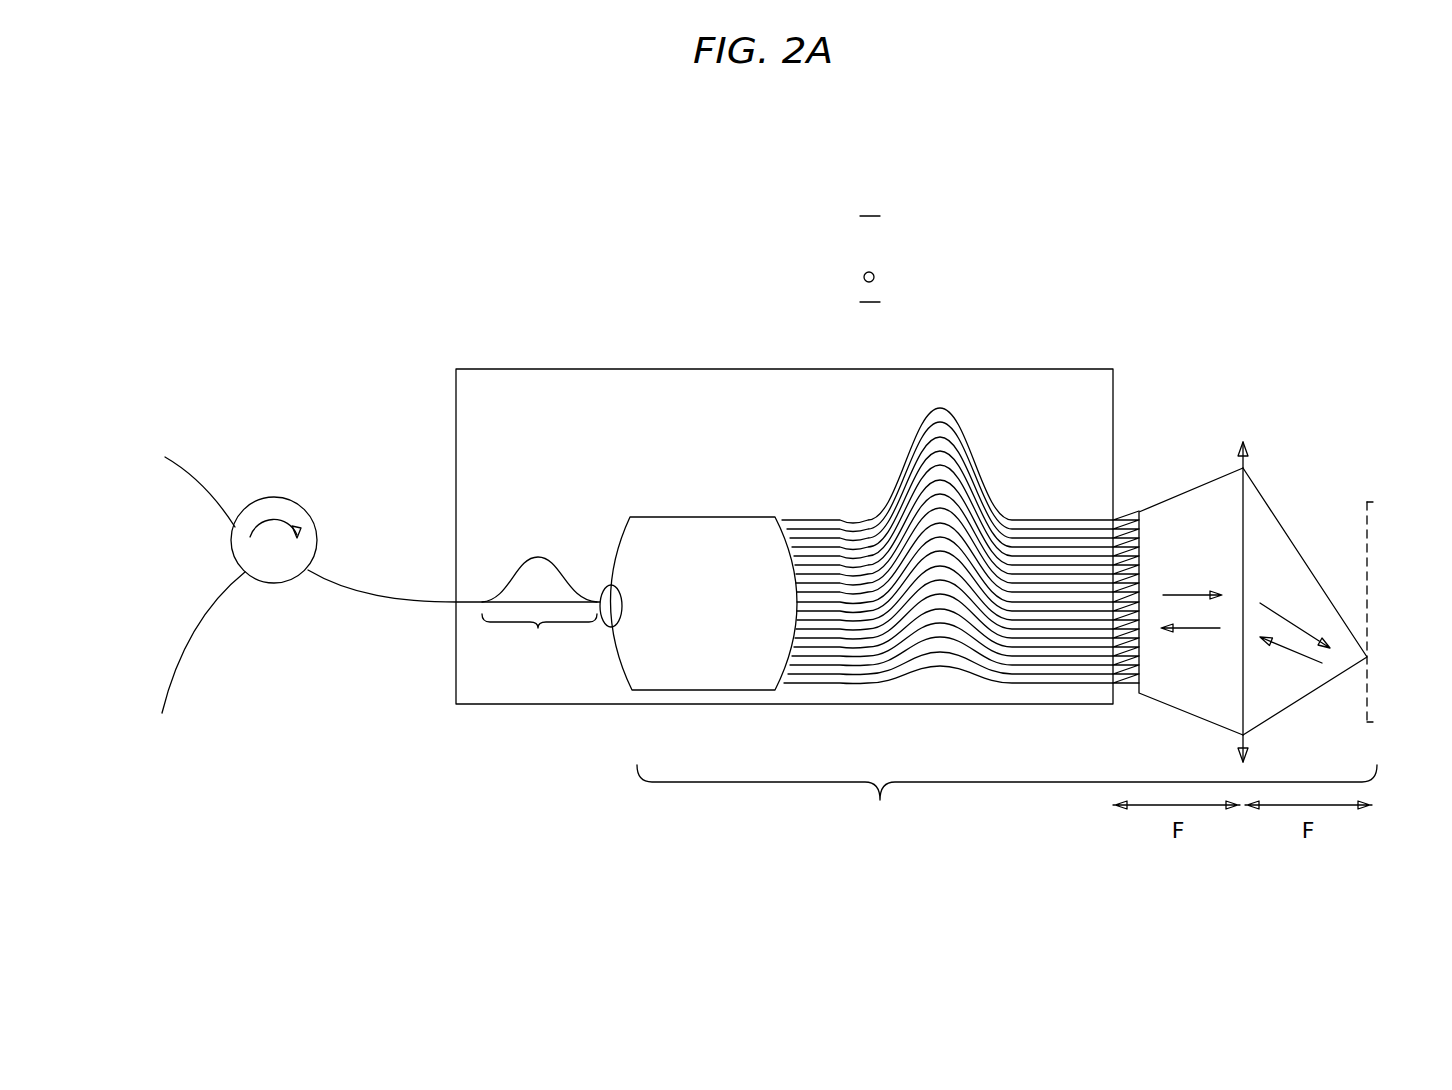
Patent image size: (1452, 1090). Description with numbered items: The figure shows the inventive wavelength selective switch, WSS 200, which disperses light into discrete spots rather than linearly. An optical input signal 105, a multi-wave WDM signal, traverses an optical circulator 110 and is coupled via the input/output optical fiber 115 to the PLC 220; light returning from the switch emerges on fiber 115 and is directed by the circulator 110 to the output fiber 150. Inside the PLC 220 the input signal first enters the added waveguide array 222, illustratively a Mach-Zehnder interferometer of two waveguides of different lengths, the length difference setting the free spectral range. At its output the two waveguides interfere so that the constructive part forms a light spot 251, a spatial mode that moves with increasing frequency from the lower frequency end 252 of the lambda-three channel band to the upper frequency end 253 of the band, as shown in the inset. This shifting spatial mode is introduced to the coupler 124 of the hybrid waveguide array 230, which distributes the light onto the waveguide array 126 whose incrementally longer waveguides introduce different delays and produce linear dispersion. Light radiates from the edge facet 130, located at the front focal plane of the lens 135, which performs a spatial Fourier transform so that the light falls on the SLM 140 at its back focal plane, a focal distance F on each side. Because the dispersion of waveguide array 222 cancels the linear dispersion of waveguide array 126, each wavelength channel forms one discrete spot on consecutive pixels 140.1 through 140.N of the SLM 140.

The WSS 200 is at (316, 254).
The optical input signal 105 is at (193, 468).
The optical circulator 110 is at (274, 519).
The optical fiber 115 is at (454, 602).
The fiber 150 is at (188, 662).
The PLC 220 is at (601, 421).
The waveguide array 222 is at (539, 609).
The coupler 124 is at (869, 143).
The waveguide array 126 is at (947, 546).
The edge facet 130 is at (1113, 493).
The lens 135 is at (1297, 583).
The SLM 140 is at (1367, 589).
The pixel 140.1 is at (1373, 507).
The pixel 140.N is at (1373, 718).
The hybrid waveguide array 230 is at (1007, 796).
The light spot 251 is at (874, 277).
The lower frequency end of the band 252 is at (889, 302).
The upper frequency end of the band 253 is at (889, 215).